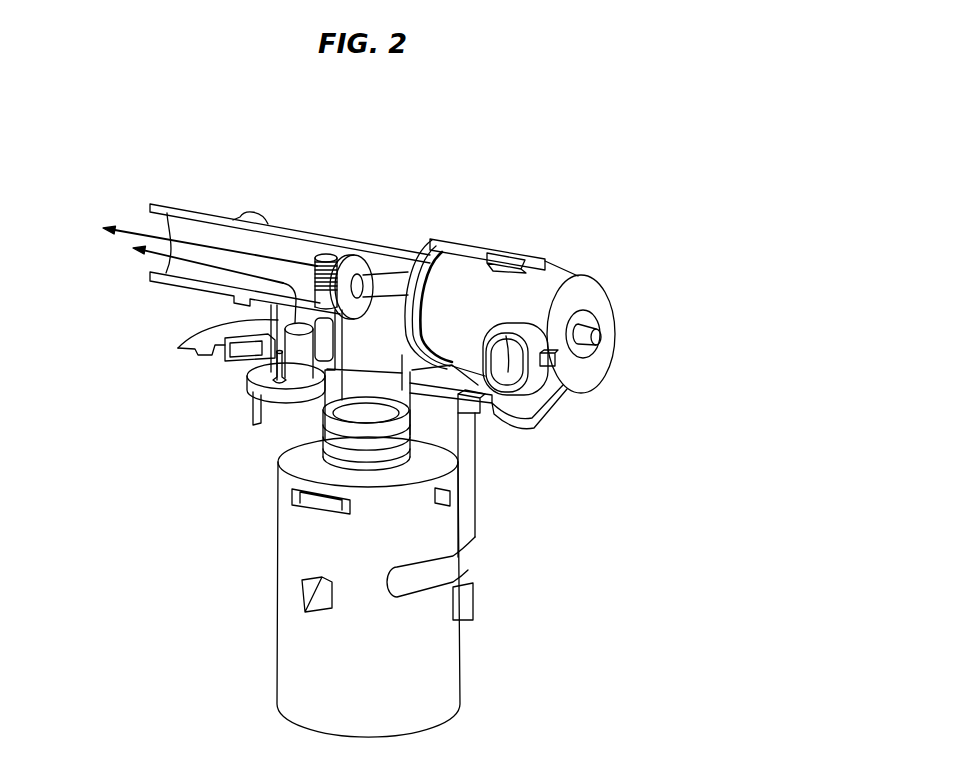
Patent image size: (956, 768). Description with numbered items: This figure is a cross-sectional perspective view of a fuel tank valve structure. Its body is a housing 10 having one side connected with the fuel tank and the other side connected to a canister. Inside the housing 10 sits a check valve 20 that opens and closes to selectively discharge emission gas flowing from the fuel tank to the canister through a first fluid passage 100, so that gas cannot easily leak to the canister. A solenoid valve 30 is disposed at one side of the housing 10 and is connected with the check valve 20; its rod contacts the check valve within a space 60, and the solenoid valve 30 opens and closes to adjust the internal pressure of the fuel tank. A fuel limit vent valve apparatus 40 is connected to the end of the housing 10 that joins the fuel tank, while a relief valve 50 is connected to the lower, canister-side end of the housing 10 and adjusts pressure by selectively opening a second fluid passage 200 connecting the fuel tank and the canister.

The first fluid passage 100 is at (212, 246).
The housing 10 is at (290, 250).
The second fluid passage 200 is at (212, 246).
The check valve 20 is at (377, 410).
The space 60 is at (388, 320).
The solenoid valve 30 is at (553, 290).
The relief valve 50 is at (302, 365).
The fuel limit vent valve apparatus 40 is at (398, 673).